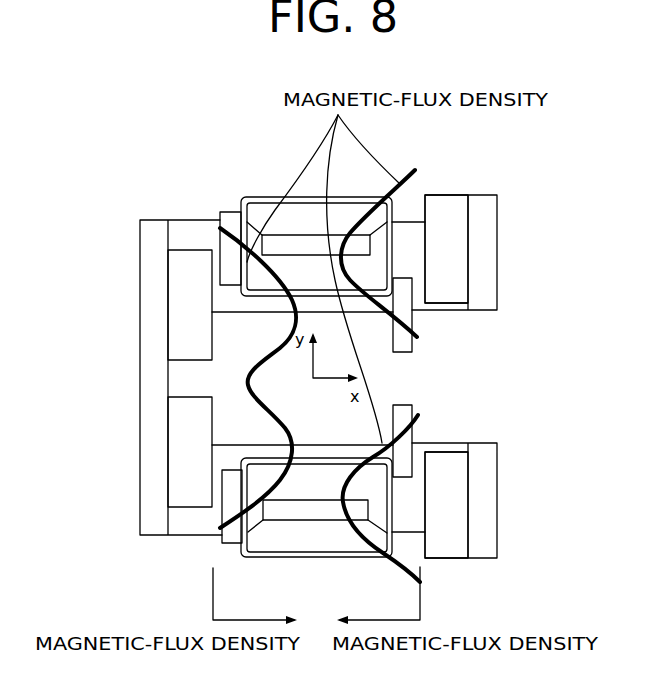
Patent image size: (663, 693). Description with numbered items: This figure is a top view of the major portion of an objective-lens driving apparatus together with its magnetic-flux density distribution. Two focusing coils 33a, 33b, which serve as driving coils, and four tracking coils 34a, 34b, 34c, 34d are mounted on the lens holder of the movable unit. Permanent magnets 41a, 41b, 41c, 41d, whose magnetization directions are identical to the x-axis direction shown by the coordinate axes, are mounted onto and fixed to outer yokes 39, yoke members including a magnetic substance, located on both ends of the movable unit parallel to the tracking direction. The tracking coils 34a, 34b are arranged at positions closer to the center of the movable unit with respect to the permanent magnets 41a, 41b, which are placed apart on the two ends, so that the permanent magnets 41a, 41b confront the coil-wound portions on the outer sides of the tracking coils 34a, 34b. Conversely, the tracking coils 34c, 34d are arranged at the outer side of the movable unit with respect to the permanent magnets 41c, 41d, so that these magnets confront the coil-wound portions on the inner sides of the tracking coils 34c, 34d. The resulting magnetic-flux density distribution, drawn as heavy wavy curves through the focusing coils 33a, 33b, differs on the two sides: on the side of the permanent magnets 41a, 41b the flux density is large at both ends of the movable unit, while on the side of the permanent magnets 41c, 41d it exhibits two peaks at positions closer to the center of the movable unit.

The focusing coil 33a is at (393, 512).
The focusing coil 33b is at (262, 235).
The tracking coil 34a is at (405, 440).
The tracking coil 34b is at (403, 302).
The tracking coil 34c is at (230, 487).
The tracking coil 34d is at (230, 213).
The outer yoke 39 is at (152, 393).
The permanent magnet 41a is at (463, 543).
The permanent magnet 41b is at (445, 202).
The permanent magnet 41c is at (187, 470).
The permanent magnet 41d is at (187, 285).